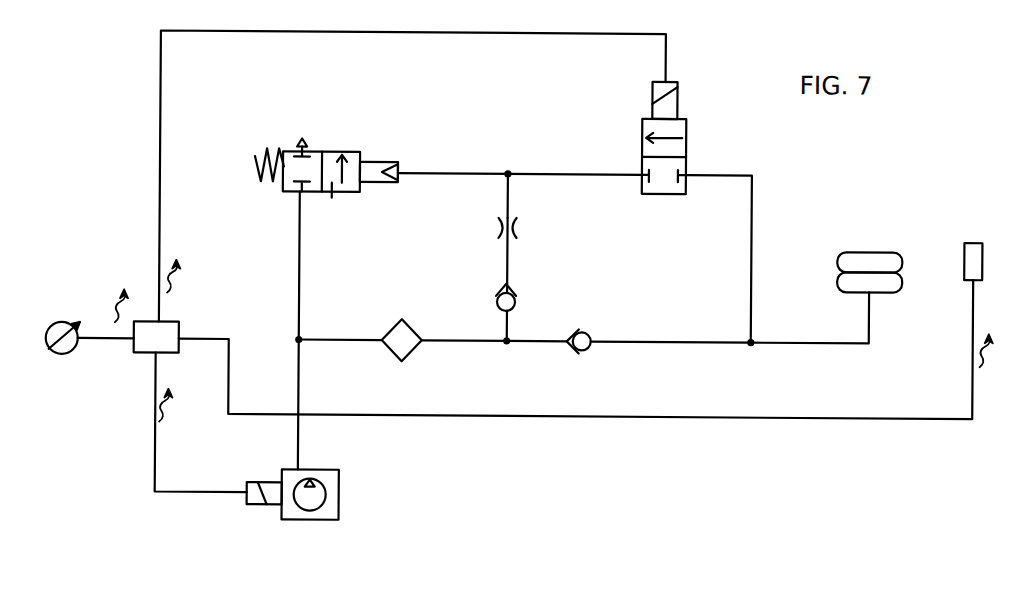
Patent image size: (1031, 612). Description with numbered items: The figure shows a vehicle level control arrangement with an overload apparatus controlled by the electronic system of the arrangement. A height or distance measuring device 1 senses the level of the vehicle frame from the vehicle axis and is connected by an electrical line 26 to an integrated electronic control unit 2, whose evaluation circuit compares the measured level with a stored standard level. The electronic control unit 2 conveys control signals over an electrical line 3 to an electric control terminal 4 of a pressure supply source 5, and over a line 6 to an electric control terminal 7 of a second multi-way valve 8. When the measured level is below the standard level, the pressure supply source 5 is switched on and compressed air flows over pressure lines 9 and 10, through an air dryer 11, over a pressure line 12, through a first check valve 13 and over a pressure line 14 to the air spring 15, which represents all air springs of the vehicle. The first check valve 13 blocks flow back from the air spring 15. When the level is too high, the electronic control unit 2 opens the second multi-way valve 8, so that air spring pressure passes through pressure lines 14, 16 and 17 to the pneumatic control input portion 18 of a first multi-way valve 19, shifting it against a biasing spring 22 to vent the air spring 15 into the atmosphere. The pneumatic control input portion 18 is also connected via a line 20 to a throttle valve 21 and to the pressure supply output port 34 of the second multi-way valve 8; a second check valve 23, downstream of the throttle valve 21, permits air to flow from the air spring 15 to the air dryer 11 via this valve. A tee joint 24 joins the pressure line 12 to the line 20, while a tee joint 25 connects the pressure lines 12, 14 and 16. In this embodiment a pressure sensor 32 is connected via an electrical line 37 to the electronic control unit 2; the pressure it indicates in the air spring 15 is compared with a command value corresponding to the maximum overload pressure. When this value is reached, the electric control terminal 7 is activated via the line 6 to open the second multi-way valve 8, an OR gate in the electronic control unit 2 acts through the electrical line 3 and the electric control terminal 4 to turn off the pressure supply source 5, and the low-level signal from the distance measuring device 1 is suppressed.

The distance measuring device 1 is at (52, 331).
The electronic control unit 2 is at (172, 335).
The electrical line 3 is at (156, 436).
The electric control terminal 4 is at (256, 506).
The pressure supply source 5 is at (330, 510).
The electrical line 6 is at (159, 184).
The electric control terminal 7 is at (651, 92).
The second multi-way valve 8 is at (641, 162).
The pressure line 9 is at (299, 374).
The pressure line 10 is at (338, 341).
The air dryer 11 is at (405, 349).
The pressure line 12 is at (537, 341).
The first check valve 13 is at (570, 347).
The pressure line 14 is at (806, 341).
The air spring 15 is at (870, 260).
The pressure line 16 is at (751, 238).
The pressure line 17 is at (447, 174).
The pneumatic control input portion 18 is at (378, 163).
The first multi-way valve 19 is at (336, 203).
The line 20 is at (507, 193).
The throttle valve 21 is at (497, 231).
The biasing spring 22 is at (254, 158).
The second check valve 23 is at (516, 293).
The tee joint 24 is at (507, 344).
The tee joint 25 is at (751, 343).
The electrical line 26 is at (103, 341).
The pressure sensor 32 is at (982, 255).
The pressure supply output port 34 is at (641, 178).
The electrical line 37 is at (650, 416).